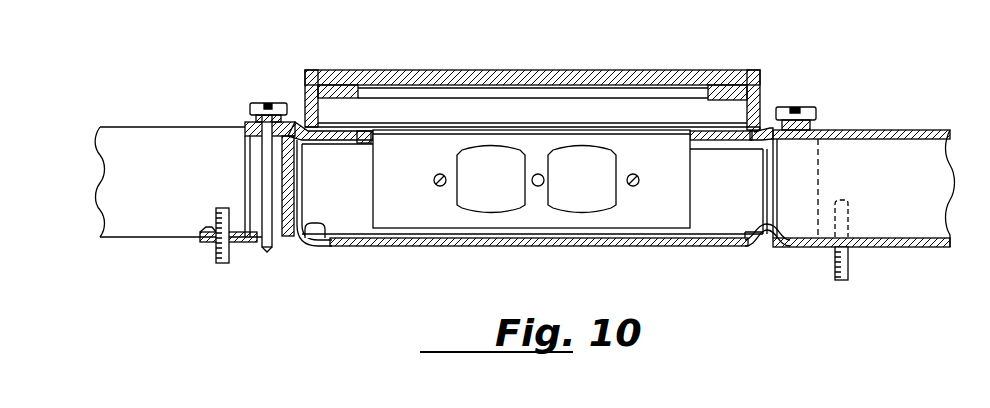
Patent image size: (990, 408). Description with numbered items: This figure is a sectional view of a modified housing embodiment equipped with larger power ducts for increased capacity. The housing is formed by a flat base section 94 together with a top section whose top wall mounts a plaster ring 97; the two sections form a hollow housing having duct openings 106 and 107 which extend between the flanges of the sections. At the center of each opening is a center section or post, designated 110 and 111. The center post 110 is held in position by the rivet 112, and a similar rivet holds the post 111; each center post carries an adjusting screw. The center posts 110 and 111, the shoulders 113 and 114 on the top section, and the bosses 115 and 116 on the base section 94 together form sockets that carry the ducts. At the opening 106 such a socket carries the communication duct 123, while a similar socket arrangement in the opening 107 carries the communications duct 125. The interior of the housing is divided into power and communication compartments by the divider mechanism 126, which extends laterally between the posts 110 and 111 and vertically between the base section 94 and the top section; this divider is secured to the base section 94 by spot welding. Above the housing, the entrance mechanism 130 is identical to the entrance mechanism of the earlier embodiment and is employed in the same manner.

The base section 94 is at (496, 246).
The plaster ring 97 is at (762, 128).
The duct opening 106 is at (297, 197).
The duct opening 107 is at (771, 188).
The center section or post 110 is at (287, 247).
The center section or post 111 is at (816, 205).
The rivet 112 is at (268, 167).
The shoulder 113 is at (296, 100).
The shoulder 114 is at (771, 132).
The boss 115 is at (321, 245).
The boss 116 is at (786, 236).
The communication duct 123 is at (190, 127).
The communications duct 125 is at (900, 132).
The divider mechanism 126 is at (670, 168).
The entrance mechanism 130 is at (402, 63).